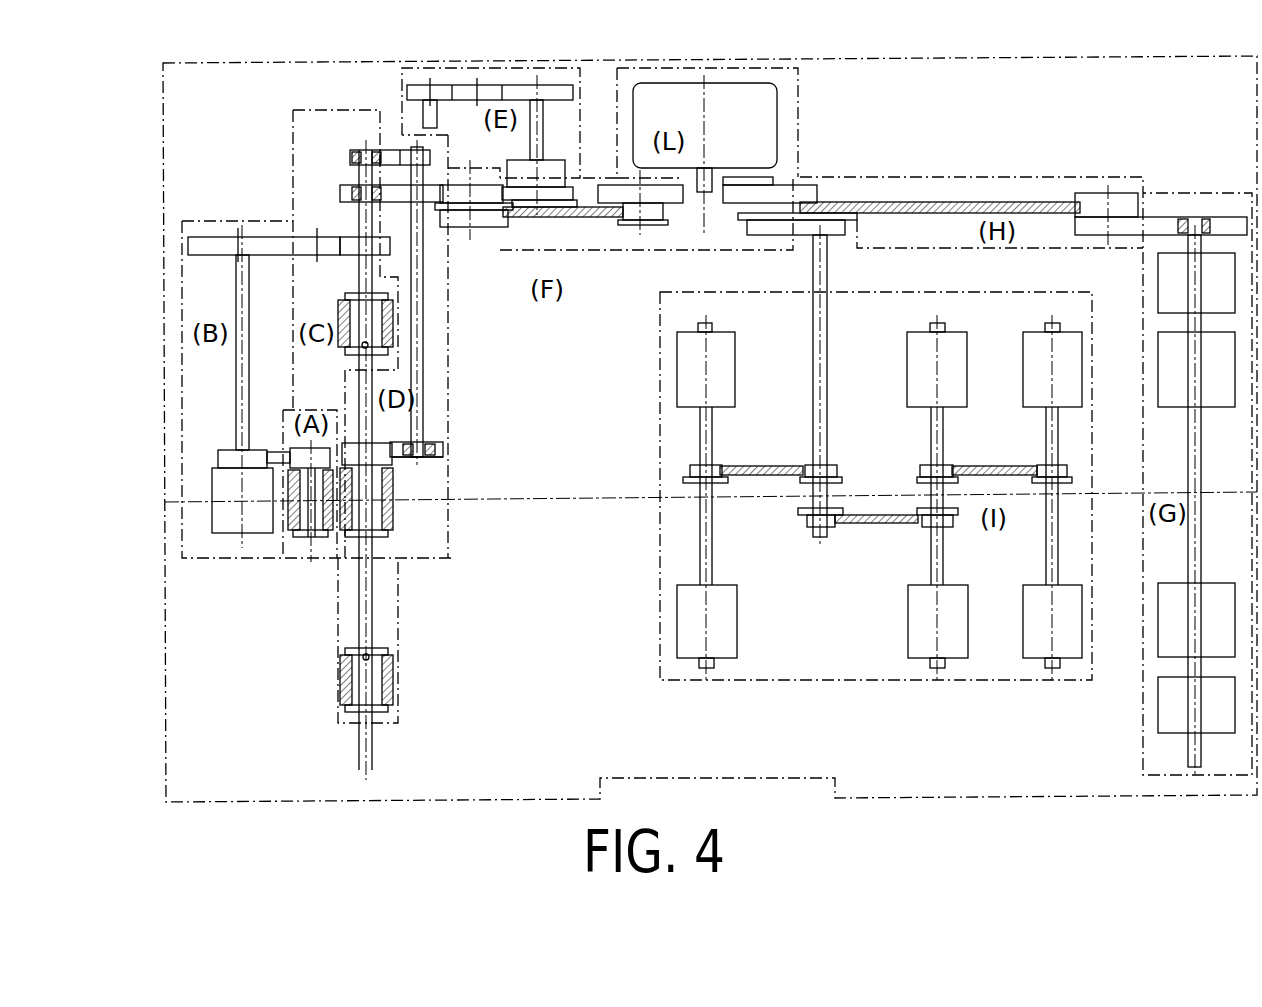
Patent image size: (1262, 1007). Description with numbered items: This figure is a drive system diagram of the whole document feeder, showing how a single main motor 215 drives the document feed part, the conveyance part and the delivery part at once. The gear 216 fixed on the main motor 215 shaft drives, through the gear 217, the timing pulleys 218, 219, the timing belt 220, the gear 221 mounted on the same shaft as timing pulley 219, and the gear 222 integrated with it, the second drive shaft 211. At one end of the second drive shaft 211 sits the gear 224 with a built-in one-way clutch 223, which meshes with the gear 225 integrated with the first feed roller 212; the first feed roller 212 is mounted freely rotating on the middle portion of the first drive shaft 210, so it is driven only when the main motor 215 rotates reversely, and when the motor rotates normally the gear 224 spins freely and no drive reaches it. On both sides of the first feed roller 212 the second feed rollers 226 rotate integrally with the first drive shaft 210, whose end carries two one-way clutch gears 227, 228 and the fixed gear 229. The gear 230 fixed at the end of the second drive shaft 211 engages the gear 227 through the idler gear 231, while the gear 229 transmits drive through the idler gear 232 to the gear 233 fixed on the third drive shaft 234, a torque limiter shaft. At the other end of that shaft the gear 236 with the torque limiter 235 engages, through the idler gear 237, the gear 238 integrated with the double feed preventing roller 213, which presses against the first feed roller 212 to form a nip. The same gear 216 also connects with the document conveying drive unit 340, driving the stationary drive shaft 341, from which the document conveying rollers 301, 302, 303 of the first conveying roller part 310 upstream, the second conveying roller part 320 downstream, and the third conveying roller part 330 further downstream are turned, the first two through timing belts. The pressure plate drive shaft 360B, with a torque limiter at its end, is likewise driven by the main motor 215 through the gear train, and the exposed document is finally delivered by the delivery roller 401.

The first drive shaft 210 is at (373, 742).
The second drive shaft 211 is at (423, 403).
The first feed roller 212 is at (395, 515).
The double feed preventing roller 213 is at (280, 560).
The main motor 215 is at (720, 95).
The gear 216 is at (710, 203).
The gear 217 is at (672, 195).
The timing pulley 218 is at (635, 213).
The timing pulley 219 is at (490, 222).
The timing belt 220 is at (588, 218).
The gear 221 is at (436, 212).
The gear 222 is at (452, 228).
The one-way clutch 223 is at (425, 442).
The gear 224 is at (440, 448).
The gear 225 is at (395, 462).
The second feed roller 226 is at (395, 342).
The gear 227 is at (350, 157).
The gear 228 is at (340, 193).
The gear 229 is at (352, 242).
The gear 230 is at (410, 157).
The idler gear 231 is at (390, 152).
The idler gear 232 is at (302, 250).
The gear 233 is at (187, 250).
The third drive shaft 234 is at (235, 372).
The torque limiter 235 is at (213, 517).
The gear 236 is at (218, 457).
The idler gear 237 is at (268, 450).
The gear 238 is at (298, 448).
The document conveying roller 301 is at (725, 355).
The document conveying roller 302 is at (965, 365).
The document conveying roller 303 is at (1082, 365).
The first conveying roller part 310 is at (726, 457).
The second conveying roller part 320 is at (923, 457).
The third conveying roller part 330 is at (1032, 457).
The document conveying drive unit 340 is at (827, 200).
The drive shaft 341 is at (827, 340).
The pressure plate drive shaft 360B is at (437, 112).
The delivery roller 401 is at (1180, 402).